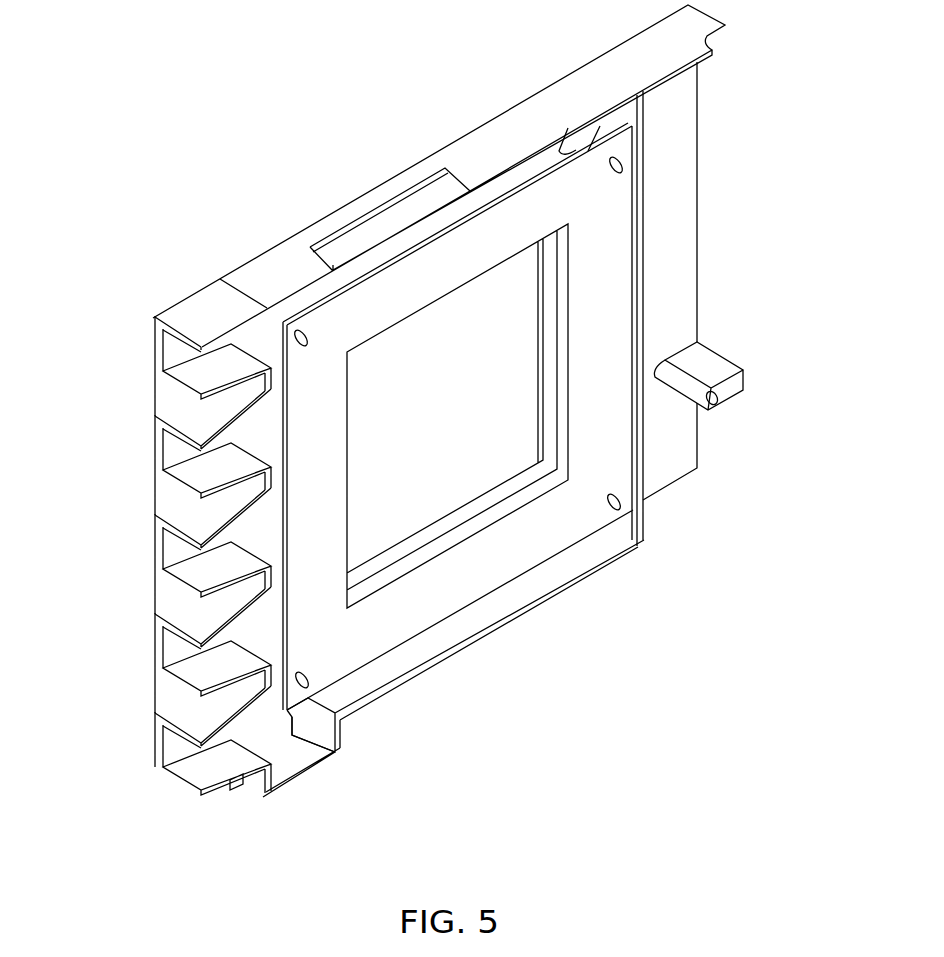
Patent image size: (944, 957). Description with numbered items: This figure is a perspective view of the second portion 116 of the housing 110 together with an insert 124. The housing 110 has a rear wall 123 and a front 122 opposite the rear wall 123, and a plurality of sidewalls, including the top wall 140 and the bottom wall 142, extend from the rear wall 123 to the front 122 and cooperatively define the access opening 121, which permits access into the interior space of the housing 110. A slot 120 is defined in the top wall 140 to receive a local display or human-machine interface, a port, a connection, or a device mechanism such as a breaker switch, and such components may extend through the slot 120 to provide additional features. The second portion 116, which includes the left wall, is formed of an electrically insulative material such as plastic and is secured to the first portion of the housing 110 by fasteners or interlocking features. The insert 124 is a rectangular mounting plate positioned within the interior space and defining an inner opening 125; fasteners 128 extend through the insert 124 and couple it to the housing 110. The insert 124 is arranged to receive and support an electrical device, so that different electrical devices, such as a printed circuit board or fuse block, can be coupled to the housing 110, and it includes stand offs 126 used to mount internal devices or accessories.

The housing 110 is at (335, 103).
The second portion 116 is at (193, 312).
The slot 120 is at (377, 225).
The access opening 121 is at (668, 299).
The front 122 is at (706, 157).
The rear wall 123 is at (158, 744).
The insert 124 is at (353, 320).
The inner opening 125 is at (563, 465).
The stand offs 126 is at (279, 672).
The fasteners 128 is at (623, 165).
The top wall 140 is at (537, 122).
The bottom wall 142 is at (490, 632).